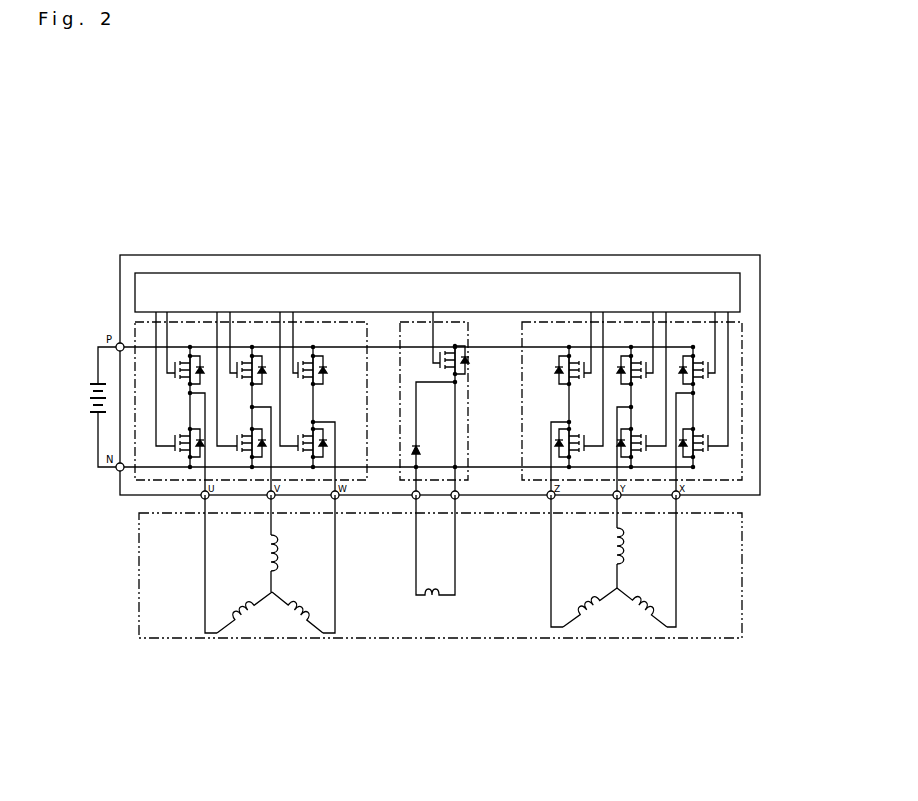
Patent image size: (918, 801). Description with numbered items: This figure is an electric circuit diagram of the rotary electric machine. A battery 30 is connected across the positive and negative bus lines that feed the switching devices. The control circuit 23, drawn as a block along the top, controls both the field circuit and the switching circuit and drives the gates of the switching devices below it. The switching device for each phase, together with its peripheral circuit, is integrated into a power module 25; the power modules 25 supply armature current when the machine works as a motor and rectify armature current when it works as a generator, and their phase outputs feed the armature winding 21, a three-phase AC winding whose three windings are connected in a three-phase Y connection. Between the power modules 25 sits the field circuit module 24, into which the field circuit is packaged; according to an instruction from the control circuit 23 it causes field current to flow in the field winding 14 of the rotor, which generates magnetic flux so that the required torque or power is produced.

The field winding 14 is at (435, 598).
The armature winding 21 is at (205, 568).
The control circuit 23 is at (285, 275).
The field circuit module 24 is at (457, 322).
The power module 25 is at (135, 323).
The battery 30 is at (90, 400).